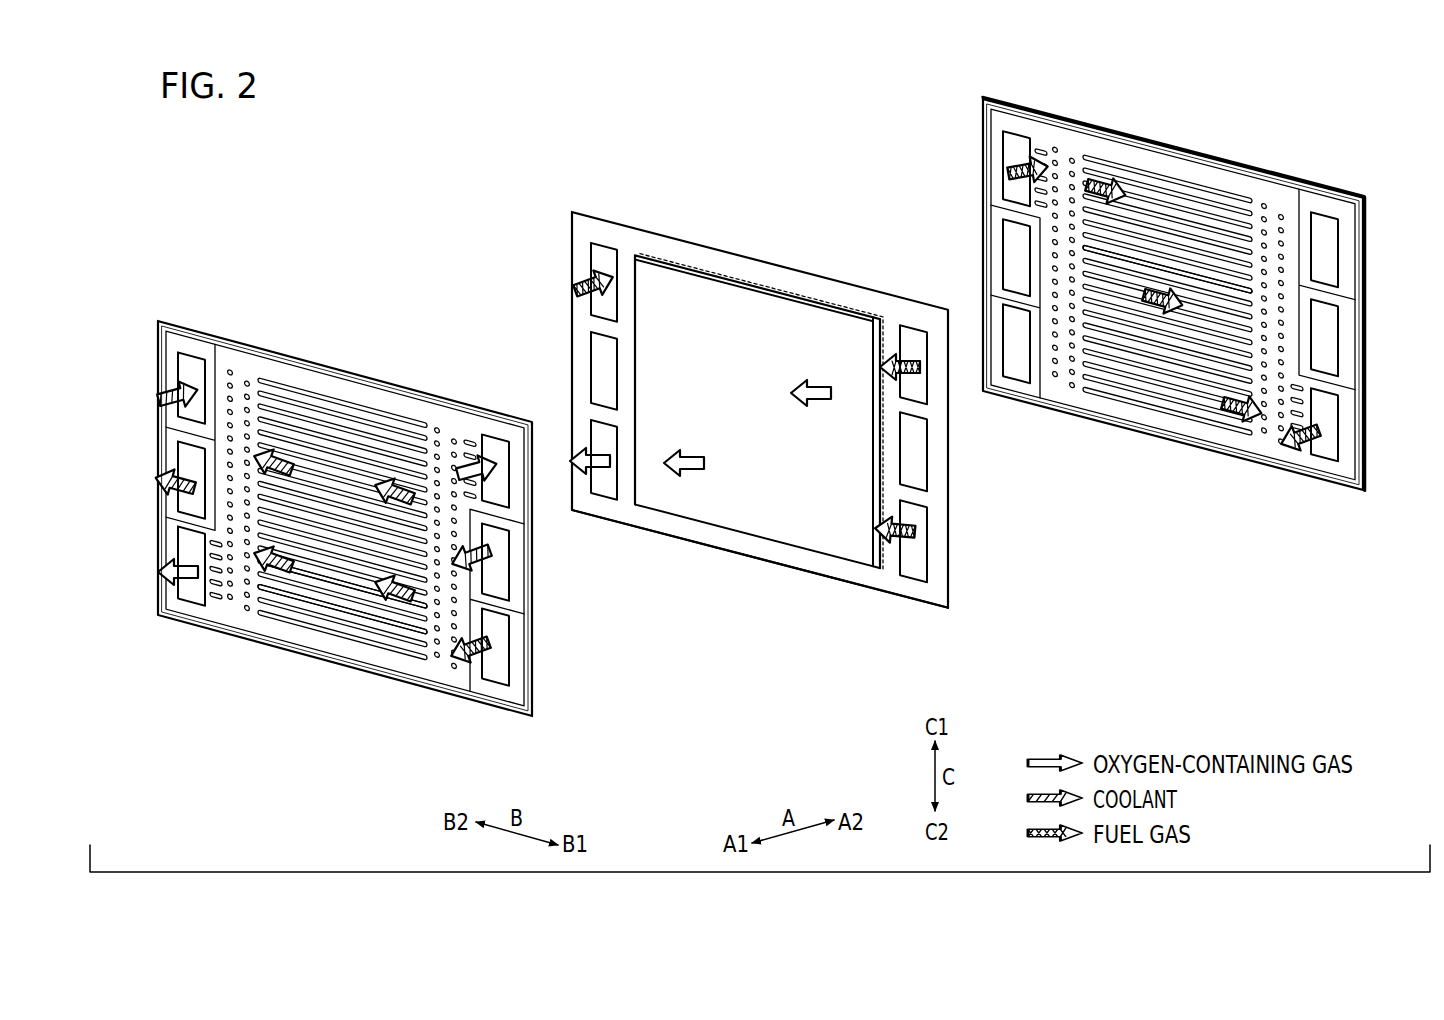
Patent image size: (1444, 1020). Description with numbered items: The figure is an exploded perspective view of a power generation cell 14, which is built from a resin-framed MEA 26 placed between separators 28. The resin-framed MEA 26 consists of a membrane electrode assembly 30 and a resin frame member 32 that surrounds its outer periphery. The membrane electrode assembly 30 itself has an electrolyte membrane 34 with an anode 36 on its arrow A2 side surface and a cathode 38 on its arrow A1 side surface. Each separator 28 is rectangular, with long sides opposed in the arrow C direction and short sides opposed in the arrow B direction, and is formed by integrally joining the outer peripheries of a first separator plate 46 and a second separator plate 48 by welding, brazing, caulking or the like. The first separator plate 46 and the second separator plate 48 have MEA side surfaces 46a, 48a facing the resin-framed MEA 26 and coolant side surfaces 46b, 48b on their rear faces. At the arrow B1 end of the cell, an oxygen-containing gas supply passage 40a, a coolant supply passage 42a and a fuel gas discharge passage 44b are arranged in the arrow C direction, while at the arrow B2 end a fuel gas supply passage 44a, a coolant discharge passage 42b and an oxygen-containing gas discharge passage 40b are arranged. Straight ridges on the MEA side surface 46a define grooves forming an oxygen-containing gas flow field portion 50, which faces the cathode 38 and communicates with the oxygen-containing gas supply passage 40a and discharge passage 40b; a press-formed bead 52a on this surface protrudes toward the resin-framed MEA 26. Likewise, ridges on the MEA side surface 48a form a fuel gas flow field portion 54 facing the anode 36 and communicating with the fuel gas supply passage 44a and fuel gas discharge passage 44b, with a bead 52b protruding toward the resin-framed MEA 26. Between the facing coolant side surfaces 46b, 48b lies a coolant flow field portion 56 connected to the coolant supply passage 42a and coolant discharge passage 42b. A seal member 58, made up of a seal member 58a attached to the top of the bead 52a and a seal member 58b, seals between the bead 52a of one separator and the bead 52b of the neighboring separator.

The power generation cell 14 is at (1124, 271).
The resin-framed MEA 26 is at (730, 252).
The separator 28 is at (1124, 271).
The membrane electrode assembly 30 is at (772, 474).
The resin frame member 32 is at (718, 536).
The electrolyte membrane 34 is at (878, 510).
The anode 36 is at (888, 552).
The cathode 38 is at (848, 510).
The oxygen-containing gas supply passage 40a is at (495, 437).
The oxygen-containing gas discharge passage 40b is at (190, 552).
The coolant supply passage 42a is at (505, 583).
The coolant discharge passage 42b is at (193, 458).
The fuel gas supply passage 44a is at (193, 373).
The fuel gas discharge passage 44b is at (505, 662).
The first separator plate 46 is at (189, 329).
The MEA side surface of first separator plate 46a is at (288, 362).
The coolant side surface of first separator plate 46b is at (238, 349).
The second separator plate 48 is at (983, 113).
The MEA side surface of second separator plate 48a is at (1072, 128).
The coolant side surface of second separator plate 48b is at (1112, 135).
The oxygen-containing gas flow field portion 50 is at (348, 617).
The bead 52a is at (342, 383).
The bead 52b is at (1160, 160).
The fuel gas flow field portion 54 is at (1212, 228).
The coolant flow field portion 56 is at (300, 592).
The seal member 58 is at (760, 404).
The seal member 58a is at (371, 384).
The seal member 58b is at (988, 185).